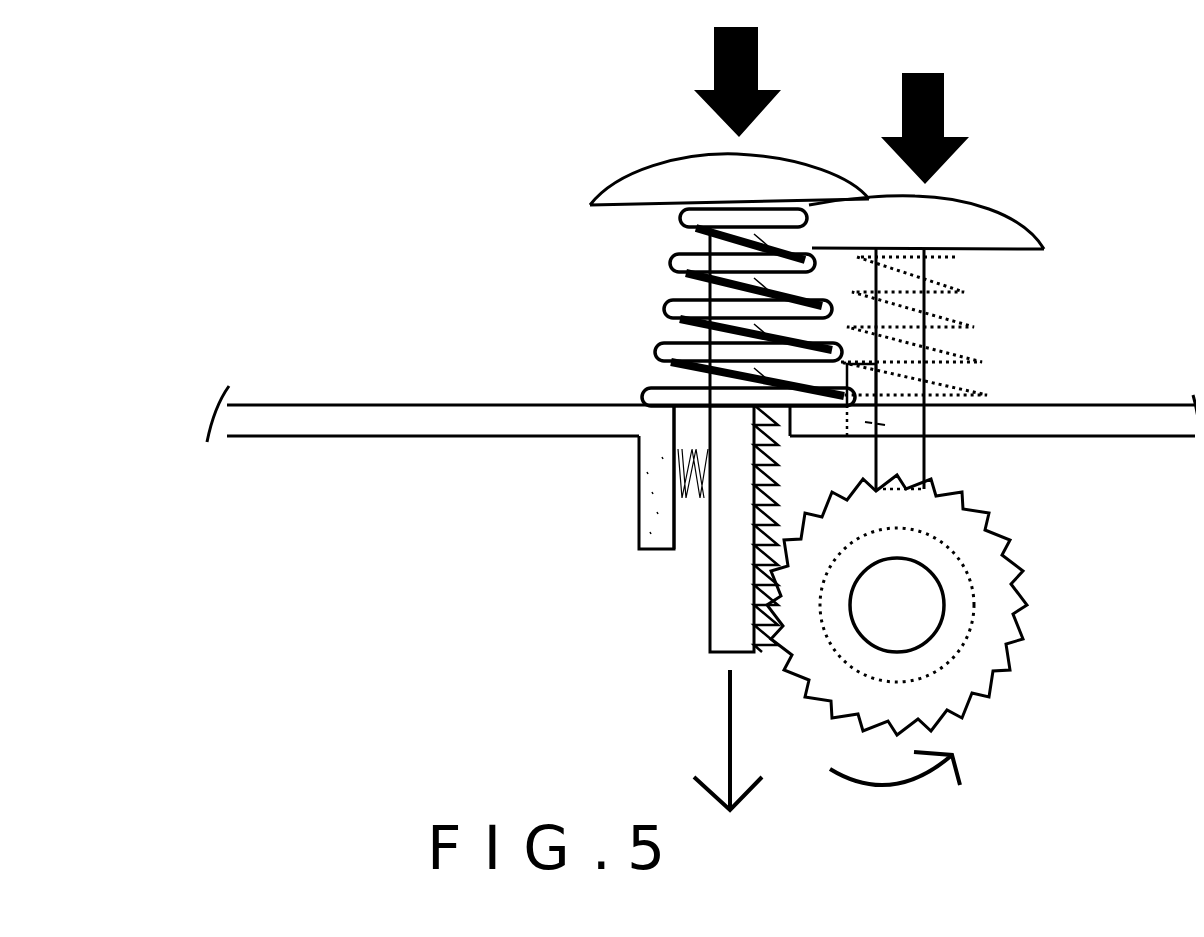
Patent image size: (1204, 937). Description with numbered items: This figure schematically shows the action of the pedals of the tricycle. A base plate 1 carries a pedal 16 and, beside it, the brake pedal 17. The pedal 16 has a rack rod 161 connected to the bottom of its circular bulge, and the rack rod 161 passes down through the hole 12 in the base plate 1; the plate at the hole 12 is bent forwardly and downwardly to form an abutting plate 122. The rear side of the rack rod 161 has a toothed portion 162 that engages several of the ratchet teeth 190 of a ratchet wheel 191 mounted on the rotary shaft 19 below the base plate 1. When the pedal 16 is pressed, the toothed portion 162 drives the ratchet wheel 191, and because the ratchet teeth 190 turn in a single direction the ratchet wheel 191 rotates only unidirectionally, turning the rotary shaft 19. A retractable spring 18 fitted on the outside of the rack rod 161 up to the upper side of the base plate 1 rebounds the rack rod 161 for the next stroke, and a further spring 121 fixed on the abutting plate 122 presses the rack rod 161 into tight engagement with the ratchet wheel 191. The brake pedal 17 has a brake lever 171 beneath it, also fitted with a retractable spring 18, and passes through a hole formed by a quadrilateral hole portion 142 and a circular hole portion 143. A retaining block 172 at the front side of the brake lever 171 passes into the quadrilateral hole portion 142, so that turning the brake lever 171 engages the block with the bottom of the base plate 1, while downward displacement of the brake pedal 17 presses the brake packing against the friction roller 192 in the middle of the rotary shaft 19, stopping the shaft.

The base plate 1 is at (325, 425).
The hole 12 is at (688, 413).
The pedal 16 is at (612, 187).
The brake pedal 17 is at (992, 227).
The retractable spring 18 is at (663, 307).
The rotary shaft 19 is at (937, 650).
The spring 121 is at (676, 468).
The abutting plate 122 is at (645, 520).
The quadrilateral hole portion 142 is at (883, 423).
The circular hole portion 143 is at (923, 439).
The rack rod 161 is at (716, 596).
The toothed portion 162 is at (760, 587).
The brake lever 171 is at (910, 456).
The retaining block 172 is at (847, 388).
The ratchet teeth 190 is at (793, 652).
The ratchet wheel 191 is at (988, 653).
The friction roller 192 is at (955, 587).